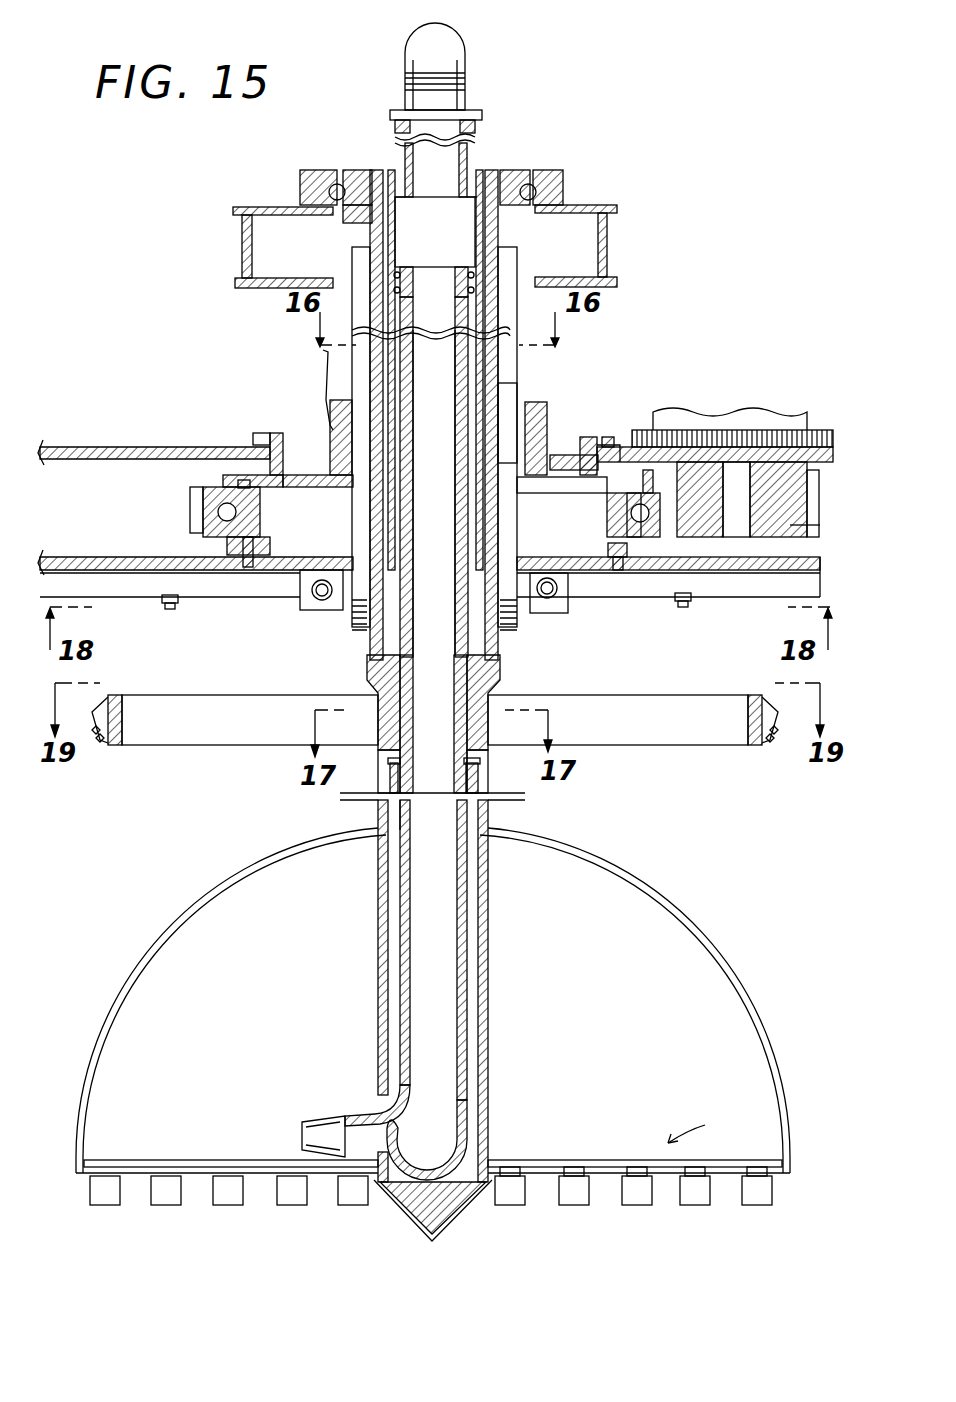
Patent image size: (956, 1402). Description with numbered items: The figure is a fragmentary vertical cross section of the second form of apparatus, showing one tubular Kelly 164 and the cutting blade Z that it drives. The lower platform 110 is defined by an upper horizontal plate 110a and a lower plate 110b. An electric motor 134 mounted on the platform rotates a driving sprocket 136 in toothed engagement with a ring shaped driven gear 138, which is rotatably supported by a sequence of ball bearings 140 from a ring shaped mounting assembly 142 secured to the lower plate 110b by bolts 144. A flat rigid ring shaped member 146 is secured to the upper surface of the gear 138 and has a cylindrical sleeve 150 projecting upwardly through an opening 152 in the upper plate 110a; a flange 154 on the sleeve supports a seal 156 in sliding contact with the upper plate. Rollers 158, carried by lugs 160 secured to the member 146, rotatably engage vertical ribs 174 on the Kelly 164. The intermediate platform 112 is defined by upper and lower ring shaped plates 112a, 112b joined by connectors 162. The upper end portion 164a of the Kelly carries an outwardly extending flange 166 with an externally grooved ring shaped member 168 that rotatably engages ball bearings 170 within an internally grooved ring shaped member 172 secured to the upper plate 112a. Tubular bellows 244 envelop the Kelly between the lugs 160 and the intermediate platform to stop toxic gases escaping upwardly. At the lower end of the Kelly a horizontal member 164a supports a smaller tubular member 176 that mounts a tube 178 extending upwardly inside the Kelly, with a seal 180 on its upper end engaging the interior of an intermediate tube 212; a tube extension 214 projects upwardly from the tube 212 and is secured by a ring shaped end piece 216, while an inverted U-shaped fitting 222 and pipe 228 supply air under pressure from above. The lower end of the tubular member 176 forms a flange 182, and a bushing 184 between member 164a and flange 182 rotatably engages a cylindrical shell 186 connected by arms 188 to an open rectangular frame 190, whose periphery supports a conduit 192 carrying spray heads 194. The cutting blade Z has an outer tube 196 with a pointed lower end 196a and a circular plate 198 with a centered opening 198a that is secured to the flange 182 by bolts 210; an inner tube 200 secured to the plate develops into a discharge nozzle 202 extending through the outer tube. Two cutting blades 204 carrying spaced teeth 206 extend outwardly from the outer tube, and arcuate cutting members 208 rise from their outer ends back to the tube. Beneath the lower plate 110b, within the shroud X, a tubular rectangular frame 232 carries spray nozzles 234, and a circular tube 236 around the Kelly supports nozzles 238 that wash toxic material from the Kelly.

The lower platform 110 is at (815, 573).
The upper horizontal plate 110a is at (150, 447).
The lower plate 110b is at (110, 557).
The intermediate platform 112 is at (610, 205).
The upper plate 112a is at (240, 207).
The lower plate 112b is at (245, 290).
The electric motor 134 is at (705, 412).
The driving sprocket 136 is at (800, 500).
The driven gear 138 is at (640, 537).
The ball bearing 140 is at (236, 512).
The ring shaped mounting assembly 142 is at (610, 520).
The bolt 144 is at (620, 570).
The ring shaped member 146 is at (545, 493).
The cylindrical sleeve 150 is at (588, 437).
The opening 152 is at (283, 460).
The flange 154 is at (615, 445).
The seal 156 is at (610, 437).
The roller 158 is at (560, 460).
The lug 160 is at (330, 400).
The connector 162 is at (252, 250).
The tubular Kelly 164 is at (483, 305).
The upper end portion 164a is at (483, 240).
The flange 166 is at (498, 222).
The externally grooved ring shaped member 168 is at (528, 184).
The ball bearing 170 is at (535, 175).
The internally grooved ring shaped member 172 is at (560, 185).
The rib 174 is at (517, 365).
The tubular member 176 is at (498, 645).
The tube 178 is at (498, 550).
The seal 180 is at (468, 280).
The flange 182 is at (490, 790).
The bushing 184 is at (467, 720).
The cylindrical shell 186 is at (490, 690).
The arm 188 is at (248, 695).
The open rectangular frame 190 is at (122, 718).
The conduit 192 is at (100, 697).
The spray head 194 is at (98, 745).
The outer tube 196 is at (488, 918).
The pointed lower end 196a is at (440, 1232).
The circular plate 198 is at (388, 790).
The centered opening 198a is at (410, 810).
The inner tube 200 is at (410, 870).
The discharge nozzle 202 is at (340, 1112).
The cutting blade 204 is at (195, 1160).
The tooth 206 is at (166, 1205).
The arcuate cutting member 208 is at (135, 990).
The bolt 210 is at (480, 768).
The intermediate tube 212 is at (517, 380).
The tube extension 214 is at (468, 158).
The ring shaped end piece 216 is at (400, 205).
The inverted U-shaped tubular fitting 222 is at (466, 48).
The pipe 228 is at (392, 130).
The tubular rectangular frame 232 is at (800, 597).
The spray nozzle 234 is at (683, 607).
The circular tube 236 is at (318, 610).
The nozzle 238 is at (560, 613).
The tubular bellows 244 is at (323, 352).
The shroud X is at (812, 535).
The cutting blade Z is at (694, 1127).